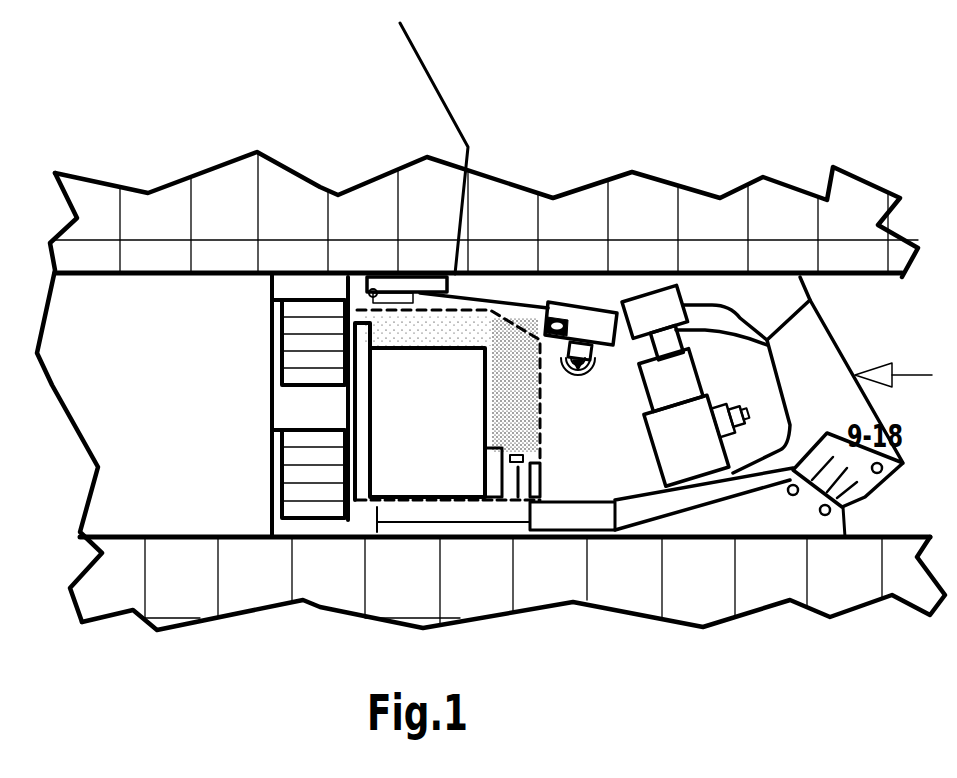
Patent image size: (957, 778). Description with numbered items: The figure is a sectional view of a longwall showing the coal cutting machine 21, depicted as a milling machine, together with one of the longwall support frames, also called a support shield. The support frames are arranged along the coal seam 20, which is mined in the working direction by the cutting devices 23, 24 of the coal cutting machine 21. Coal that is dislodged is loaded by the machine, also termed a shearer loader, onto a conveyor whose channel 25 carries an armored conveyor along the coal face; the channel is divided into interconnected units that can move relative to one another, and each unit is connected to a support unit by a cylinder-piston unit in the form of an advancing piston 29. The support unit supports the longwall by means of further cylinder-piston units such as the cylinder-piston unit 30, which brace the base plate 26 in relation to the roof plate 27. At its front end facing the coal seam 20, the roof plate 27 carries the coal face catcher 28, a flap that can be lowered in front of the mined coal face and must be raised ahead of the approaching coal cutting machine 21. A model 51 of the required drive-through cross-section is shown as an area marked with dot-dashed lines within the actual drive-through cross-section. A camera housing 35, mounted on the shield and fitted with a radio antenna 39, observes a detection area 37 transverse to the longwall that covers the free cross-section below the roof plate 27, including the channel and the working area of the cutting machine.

The coal seam 20 is at (188, 446).
The coal cutting machine 21 is at (457, 432).
The cutting device 23 is at (333, 219).
The cutting device 24 is at (304, 565).
The channel 25 is at (456, 600).
The base plate 26 is at (789, 490).
The roof plate 27 is at (591, 201).
The coal face catcher 28 is at (434, 157).
The advancing piston 29 is at (576, 601).
The cylinder-piston unit 30 is at (686, 265).
The camera housing 35 is at (620, 202).
The detection area 37 is at (704, 610).
The radio antenna 39 is at (448, 232).
The model 51 is at (563, 360).